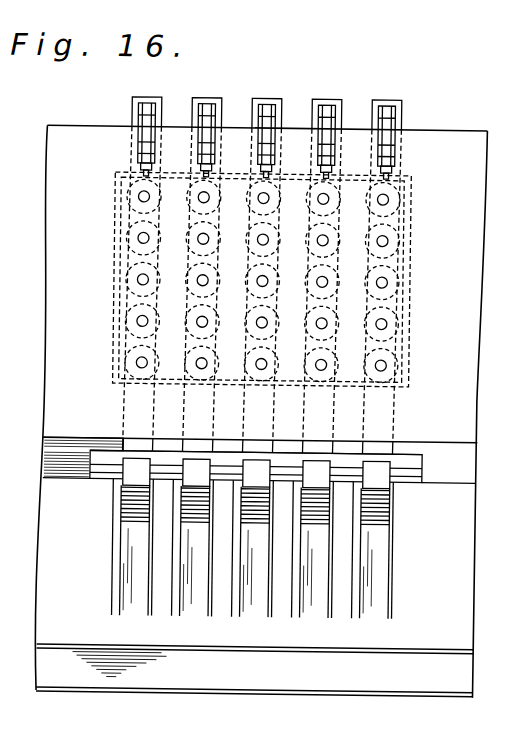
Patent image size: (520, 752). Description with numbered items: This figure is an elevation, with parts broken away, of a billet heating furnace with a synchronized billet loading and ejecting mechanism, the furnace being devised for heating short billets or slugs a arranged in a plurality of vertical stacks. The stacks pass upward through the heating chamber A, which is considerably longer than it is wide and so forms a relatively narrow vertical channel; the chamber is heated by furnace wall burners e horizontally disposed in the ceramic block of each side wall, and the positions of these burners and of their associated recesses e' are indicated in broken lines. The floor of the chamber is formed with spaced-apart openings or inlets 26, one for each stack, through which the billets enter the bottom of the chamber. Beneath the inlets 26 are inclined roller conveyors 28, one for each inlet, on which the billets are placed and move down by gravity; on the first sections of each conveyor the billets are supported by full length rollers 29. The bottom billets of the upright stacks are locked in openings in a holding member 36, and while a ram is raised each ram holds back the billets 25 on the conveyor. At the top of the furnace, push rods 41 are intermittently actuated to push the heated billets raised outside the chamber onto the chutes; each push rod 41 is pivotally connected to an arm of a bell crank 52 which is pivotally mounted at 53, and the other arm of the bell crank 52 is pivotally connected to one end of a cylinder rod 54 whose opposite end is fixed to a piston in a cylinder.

The push rod 41 is at (238, 131).
The bell crank 52 is at (136, 113).
The pivotal mounting of bell crank 53 is at (142, 134).
The cylinder rod 54 is at (135, 172).
The heating chamber A is at (415, 211).
The furnace wall burner e is at (290, 281).
The recesses around holes e' is at (289, 281).
The billets 25 is at (400, 393).
The inlet 26 is at (401, 442).
The holding member 36 is at (409, 461).
The billet a is at (138, 447).
The roller conveyor 28 is at (117, 512).
The full length roller 29 is at (379, 516).